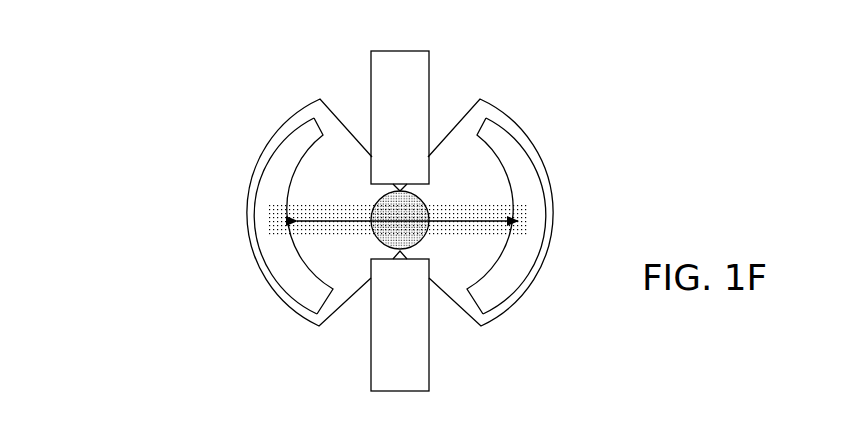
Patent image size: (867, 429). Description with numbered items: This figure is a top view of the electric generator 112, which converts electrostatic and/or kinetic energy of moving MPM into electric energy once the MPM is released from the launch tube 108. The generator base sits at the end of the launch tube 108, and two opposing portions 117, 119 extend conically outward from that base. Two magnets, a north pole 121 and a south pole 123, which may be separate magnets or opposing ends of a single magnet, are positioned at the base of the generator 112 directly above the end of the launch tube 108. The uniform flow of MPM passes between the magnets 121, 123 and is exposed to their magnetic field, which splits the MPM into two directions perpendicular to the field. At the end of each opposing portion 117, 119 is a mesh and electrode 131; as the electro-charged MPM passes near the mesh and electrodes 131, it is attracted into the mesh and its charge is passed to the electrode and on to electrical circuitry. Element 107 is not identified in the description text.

The electric generator 112 is at (172, 107).
The north pole magnet 121 is at (382, 72).
The south pole magnet 123 is at (371, 353).
The opposing portion 117 is at (247, 222).
The opposing portion 119 is at (542, 265).
The mesh and electrode 131 is at (265, 190).
The magnetic field region 107 is at (392, 205).
The launch tube 108 is at (428, 242).